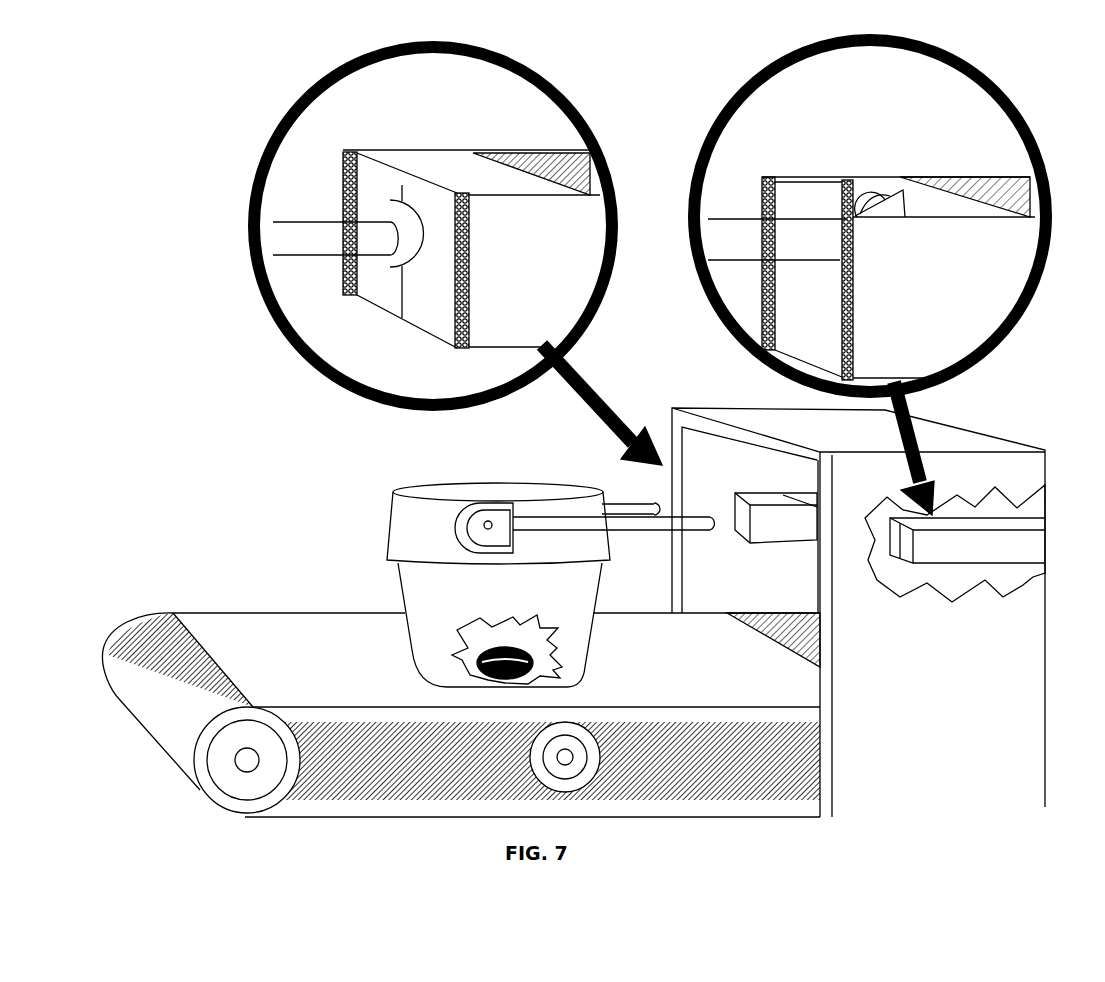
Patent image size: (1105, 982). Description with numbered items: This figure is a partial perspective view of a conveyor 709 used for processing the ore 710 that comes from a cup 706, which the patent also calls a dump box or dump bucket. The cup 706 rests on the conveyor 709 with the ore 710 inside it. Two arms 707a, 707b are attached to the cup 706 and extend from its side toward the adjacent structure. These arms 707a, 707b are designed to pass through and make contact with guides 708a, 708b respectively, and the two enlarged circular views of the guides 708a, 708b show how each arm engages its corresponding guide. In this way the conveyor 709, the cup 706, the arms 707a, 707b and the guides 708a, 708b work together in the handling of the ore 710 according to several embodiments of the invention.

The cup 706 is at (388, 478).
The arm 707a is at (637, 503).
The arm 707b is at (621, 518).
The guide 708a is at (521, 52).
The guide 708b is at (758, 64).
The conveyor 709 is at (180, 791).
The ore 710 is at (490, 655).